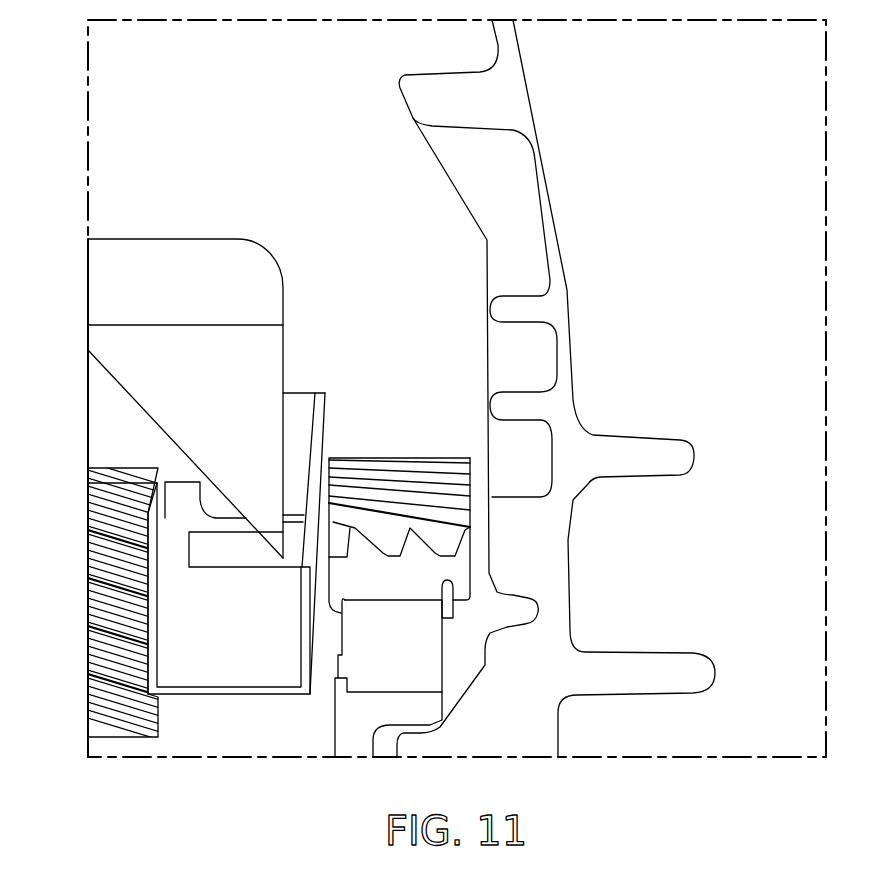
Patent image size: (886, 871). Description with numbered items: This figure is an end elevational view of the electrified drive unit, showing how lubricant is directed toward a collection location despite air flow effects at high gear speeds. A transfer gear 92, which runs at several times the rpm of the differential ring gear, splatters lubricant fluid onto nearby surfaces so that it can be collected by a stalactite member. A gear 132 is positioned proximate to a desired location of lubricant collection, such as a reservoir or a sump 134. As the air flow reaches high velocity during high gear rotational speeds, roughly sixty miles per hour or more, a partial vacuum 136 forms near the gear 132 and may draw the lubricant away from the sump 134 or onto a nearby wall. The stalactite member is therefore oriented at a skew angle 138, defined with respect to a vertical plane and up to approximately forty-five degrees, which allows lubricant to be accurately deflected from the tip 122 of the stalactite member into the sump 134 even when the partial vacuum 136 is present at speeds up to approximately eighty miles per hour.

The transfer gear 92 is at (370, 505).
The tip 122 is at (283, 558).
The gear 132 is at (112, 514).
The sump 134 is at (205, 662).
The partial vacuum 136 is at (155, 683).
The skew angle 138 is at (138, 407).